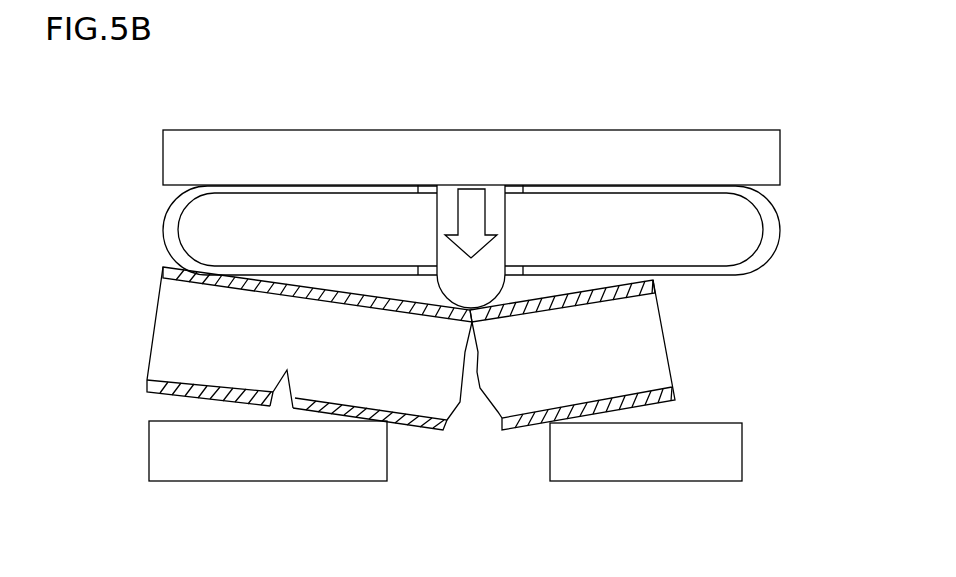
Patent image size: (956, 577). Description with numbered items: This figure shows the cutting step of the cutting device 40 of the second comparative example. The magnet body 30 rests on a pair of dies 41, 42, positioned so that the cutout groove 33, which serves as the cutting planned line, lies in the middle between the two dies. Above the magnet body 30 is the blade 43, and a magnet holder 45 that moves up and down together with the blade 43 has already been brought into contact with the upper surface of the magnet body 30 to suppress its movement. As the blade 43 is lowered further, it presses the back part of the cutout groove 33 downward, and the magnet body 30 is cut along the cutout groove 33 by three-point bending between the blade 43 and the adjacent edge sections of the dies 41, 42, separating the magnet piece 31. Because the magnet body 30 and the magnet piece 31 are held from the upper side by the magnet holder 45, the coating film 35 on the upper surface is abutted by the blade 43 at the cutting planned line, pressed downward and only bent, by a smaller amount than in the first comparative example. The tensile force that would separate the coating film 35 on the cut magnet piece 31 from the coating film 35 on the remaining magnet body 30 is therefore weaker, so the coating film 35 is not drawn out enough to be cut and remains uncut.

The magnet body 30 is at (332, 290).
The magnet piece 31 is at (640, 340).
The cutout groove 33 is at (287, 392).
The coating film 35 is at (245, 400).
The cutting device 40 is at (653, 118).
The die 41 is at (360, 463).
The die 42 is at (652, 465).
The blade 43 is at (490, 245).
The magnet holder 45 is at (772, 233).